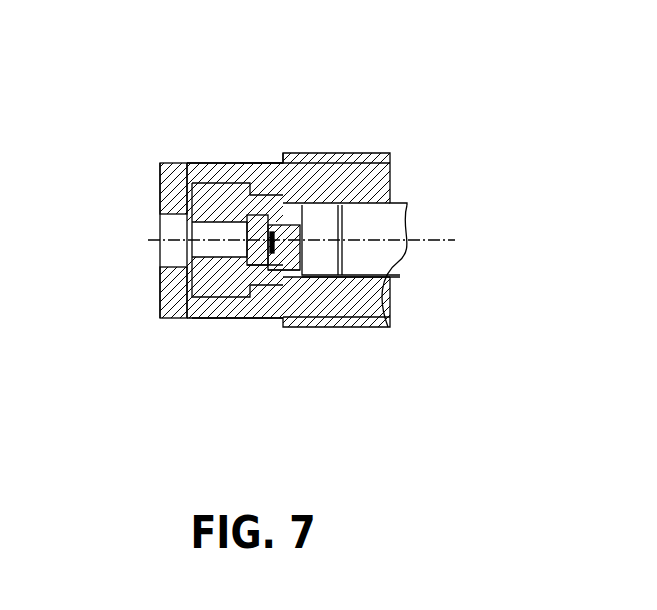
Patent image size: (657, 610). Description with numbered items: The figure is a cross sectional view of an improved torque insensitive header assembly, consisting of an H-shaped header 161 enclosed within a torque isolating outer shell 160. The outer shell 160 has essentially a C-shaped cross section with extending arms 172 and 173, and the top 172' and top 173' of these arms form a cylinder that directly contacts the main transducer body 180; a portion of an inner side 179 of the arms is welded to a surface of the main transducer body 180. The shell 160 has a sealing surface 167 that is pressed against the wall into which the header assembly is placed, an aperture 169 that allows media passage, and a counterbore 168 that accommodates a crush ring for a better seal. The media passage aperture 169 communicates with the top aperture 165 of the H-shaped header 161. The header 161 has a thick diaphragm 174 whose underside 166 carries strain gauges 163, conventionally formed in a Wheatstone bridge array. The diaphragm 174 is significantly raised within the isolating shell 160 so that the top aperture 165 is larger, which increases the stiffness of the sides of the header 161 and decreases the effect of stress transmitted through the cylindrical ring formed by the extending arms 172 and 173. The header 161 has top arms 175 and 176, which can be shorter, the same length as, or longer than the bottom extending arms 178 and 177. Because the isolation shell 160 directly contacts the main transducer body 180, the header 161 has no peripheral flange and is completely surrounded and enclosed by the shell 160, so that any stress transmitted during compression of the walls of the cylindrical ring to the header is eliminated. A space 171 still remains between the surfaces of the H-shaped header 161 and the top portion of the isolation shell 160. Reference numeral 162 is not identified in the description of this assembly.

The torque isolating outer shell 160 is at (220, 180).
The H-shaped header 161 is at (276, 283).
The tube bore 162 is at (310, 290).
The strain gauges 163 is at (302, 283).
The top aperture 165 is at (242, 254).
The underside of the diaphragm 166 is at (276, 225).
The sealing surface 167 is at (158, 295).
The counterbore 168 is at (160, 267).
The aperture 169 is at (165, 217).
The space 171 is at (237, 306).
The extending arm 172 is at (206, 85).
The top of extending arm 172' is at (394, 108).
The extending arm 173 is at (211, 345).
The top of extending arm 173' is at (223, 360).
The thick diaphragm 174 is at (250, 221).
The top arm 175 is at (183, 160).
The top arm 176 is at (200, 297).
The bottom extending arm 177 is at (281, 202).
The bottom extending arm 178 is at (281, 262).
The inner side 179 is at (253, 177).
The main transducer body 180 is at (333, 167).